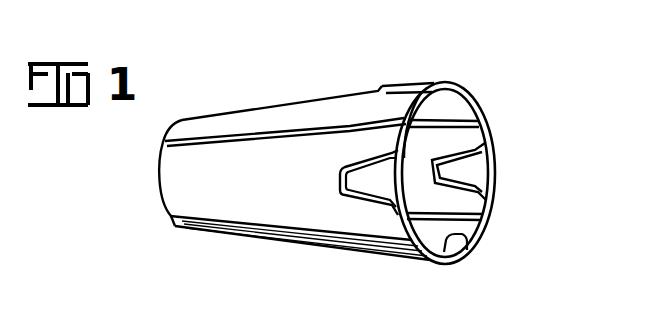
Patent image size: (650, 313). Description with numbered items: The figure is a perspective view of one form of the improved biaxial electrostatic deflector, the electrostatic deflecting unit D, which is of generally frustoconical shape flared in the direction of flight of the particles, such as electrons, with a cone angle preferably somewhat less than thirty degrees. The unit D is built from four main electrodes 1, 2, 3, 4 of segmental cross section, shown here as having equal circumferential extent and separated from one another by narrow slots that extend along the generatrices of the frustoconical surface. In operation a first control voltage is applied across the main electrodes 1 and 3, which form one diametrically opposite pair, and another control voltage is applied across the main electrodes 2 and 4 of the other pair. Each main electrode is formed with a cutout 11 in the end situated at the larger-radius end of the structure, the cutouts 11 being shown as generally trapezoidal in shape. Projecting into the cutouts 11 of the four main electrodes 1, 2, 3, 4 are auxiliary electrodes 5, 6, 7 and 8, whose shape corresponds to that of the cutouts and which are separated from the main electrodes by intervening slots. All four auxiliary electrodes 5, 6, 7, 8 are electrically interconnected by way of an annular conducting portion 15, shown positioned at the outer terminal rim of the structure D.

The main electrode 1 is at (339, 95).
The main electrode 2 is at (480, 138).
The main electrode 3 is at (380, 254).
The main electrode 4 is at (282, 142).
The auxiliary electrode 5 is at (427, 83).
The auxiliary electrode 6 is at (470, 192).
The auxiliary electrode 7 is at (465, 243).
The auxiliary electrode 8 is at (372, 162).
The cutout 11 is at (338, 173).
The annular conducting portion 15 is at (474, 101).
The electrostatic deflecting unit D is at (217, 99).